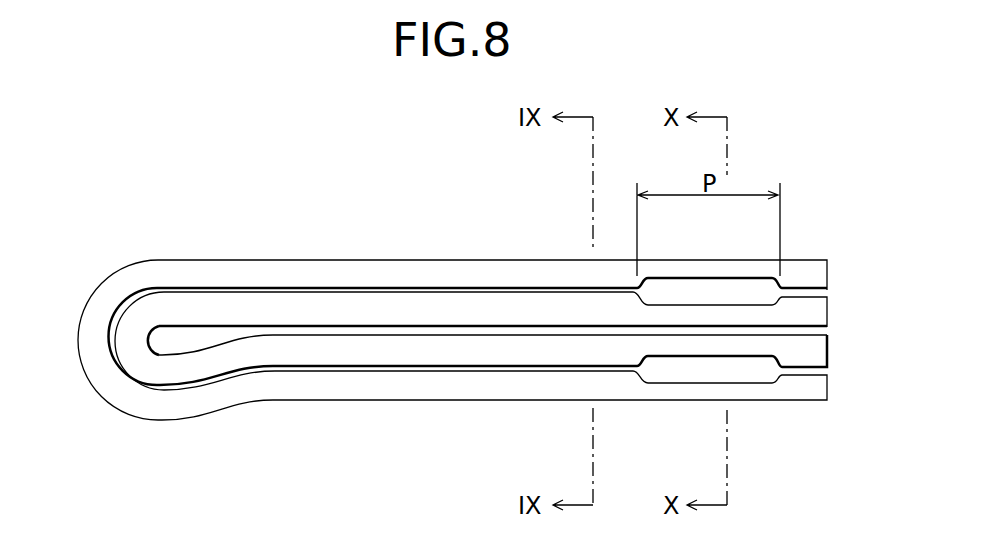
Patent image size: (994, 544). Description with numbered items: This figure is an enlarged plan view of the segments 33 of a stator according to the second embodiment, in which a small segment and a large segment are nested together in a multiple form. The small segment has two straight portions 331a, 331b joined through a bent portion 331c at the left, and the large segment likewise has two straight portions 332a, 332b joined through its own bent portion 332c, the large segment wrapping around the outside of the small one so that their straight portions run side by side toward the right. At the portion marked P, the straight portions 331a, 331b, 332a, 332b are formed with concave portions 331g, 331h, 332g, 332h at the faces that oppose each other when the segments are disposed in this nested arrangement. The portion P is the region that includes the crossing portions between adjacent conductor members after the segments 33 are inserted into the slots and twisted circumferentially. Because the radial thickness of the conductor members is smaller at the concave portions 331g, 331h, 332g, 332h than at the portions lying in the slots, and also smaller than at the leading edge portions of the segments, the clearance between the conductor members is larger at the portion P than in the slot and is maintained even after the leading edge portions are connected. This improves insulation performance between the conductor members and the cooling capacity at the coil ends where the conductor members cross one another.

The segments 33 is at (194, 189).
The straight portion of small segment 331a is at (362, 270).
The straight portion of small segment 331b is at (358, 390).
The bent portion of base film 331c is at (132, 400).
The concave portion 331g is at (662, 280).
The concave portion 331h is at (680, 378).
The straight portion of large segment 332a is at (425, 307).
The straight portion of large segment 332b is at (428, 353).
The bent portion of cover film 332c is at (127, 348).
The concave portion 332g is at (737, 305).
The concave portion 332h is at (757, 356).